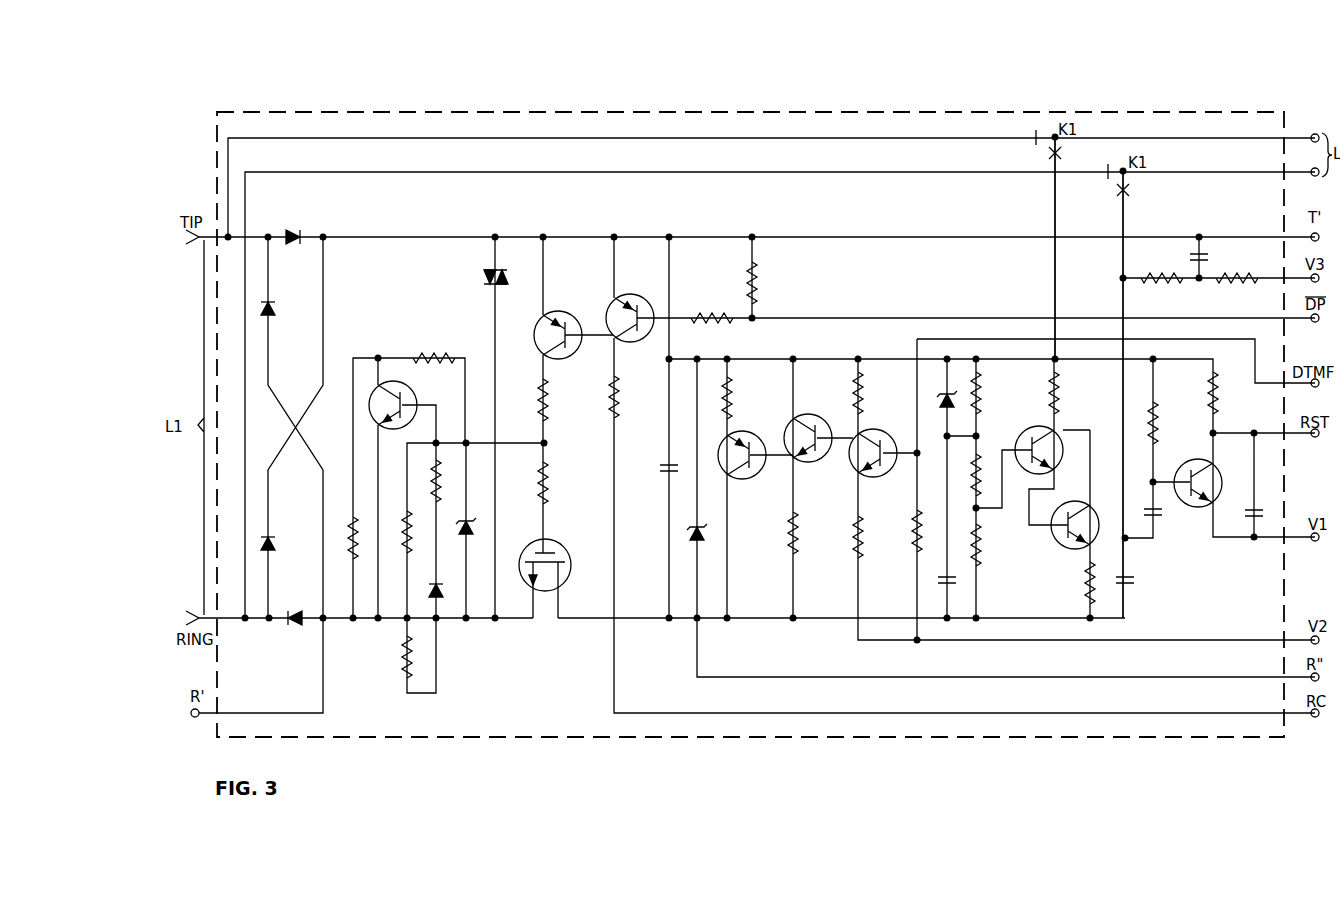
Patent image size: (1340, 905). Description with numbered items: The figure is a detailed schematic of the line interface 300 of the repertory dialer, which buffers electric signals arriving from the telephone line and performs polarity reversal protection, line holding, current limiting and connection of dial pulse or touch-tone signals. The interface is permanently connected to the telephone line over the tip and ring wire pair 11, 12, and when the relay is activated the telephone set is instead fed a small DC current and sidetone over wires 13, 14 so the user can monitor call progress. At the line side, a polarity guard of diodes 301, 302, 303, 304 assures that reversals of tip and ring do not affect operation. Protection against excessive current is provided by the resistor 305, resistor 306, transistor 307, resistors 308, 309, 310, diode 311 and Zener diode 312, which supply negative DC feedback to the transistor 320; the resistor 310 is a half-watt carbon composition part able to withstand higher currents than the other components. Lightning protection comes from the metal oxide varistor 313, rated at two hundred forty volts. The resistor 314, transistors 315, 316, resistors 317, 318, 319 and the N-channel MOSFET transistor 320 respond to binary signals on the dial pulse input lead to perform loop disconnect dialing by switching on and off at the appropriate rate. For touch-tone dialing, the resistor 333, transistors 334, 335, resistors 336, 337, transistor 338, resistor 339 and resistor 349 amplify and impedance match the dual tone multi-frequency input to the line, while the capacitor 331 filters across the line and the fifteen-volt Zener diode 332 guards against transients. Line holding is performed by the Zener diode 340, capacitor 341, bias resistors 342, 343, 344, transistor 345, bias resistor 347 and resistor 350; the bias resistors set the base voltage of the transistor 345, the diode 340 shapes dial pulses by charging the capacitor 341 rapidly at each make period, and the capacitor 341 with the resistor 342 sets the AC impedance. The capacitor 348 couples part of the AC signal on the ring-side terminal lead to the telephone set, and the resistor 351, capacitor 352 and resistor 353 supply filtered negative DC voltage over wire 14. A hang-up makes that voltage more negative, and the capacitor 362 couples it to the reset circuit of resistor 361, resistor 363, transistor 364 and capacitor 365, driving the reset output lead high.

The line interface 300 is at (700, 112).
The wire 11 is at (250, 237).
The wire 12 is at (260, 618).
The wire 13 is at (1053, 260).
The wire 14 is at (1120, 253).
The diode 301 is at (299, 231).
The diode 302 is at (272, 316).
The diode 303 is at (272, 550).
The diode 304 is at (294, 627).
The resistor 305 is at (350, 525).
The resistor 306 is at (432, 350).
The transistor 307 is at (415, 394).
The resistor 308 is at (405, 556).
The resistor 309 is at (441, 487).
The resistor 310 is at (404, 656).
The diode 311 is at (442, 598).
The Zener diode 312 is at (477, 529).
The metal oxide varistor 313 is at (485, 273).
The resistor 314 is at (548, 412).
The transistor 315 is at (556, 311).
The transistor 316 is at (620, 296).
The resistor 317 is at (695, 314).
The resistor 318 is at (758, 290).
The resistor 319 is at (612, 398).
The N-channel MOSFET transistor 320 is at (562, 590).
The capacitor 331 is at (665, 480).
The Zener diode 332 is at (708, 537).
The resistor 333 is at (732, 389).
The transistor 334 is at (745, 432).
The transistor 335 is at (811, 462).
The resistor 336 is at (790, 530).
The resistor 337 is at (856, 378).
The transistor 338 is at (870, 430).
The resistor 339 is at (856, 534).
The Zener diode 340 is at (940, 398).
The capacitor 341 is at (942, 583).
The bias resistor 342 is at (980, 392).
The bias resistor 343 is at (980, 460).
The bias resistor 344 is at (981, 545).
The transistor 345 is at (1052, 428).
The bias resistor 347 is at (1085, 590).
The capacitor 348 is at (1133, 578).
The resistor 349 is at (915, 520).
The resistor 350 is at (1058, 390).
The resistor 351 is at (1162, 280).
The capacitor 352 is at (1193, 257).
The resistor 353 is at (1228, 278).
The resistor 361 is at (1156, 408).
The capacitor 362 is at (1160, 514).
The resistor 363 is at (1215, 405).
The transistor 364 is at (1206, 462).
The capacitor 365 is at (1250, 522).